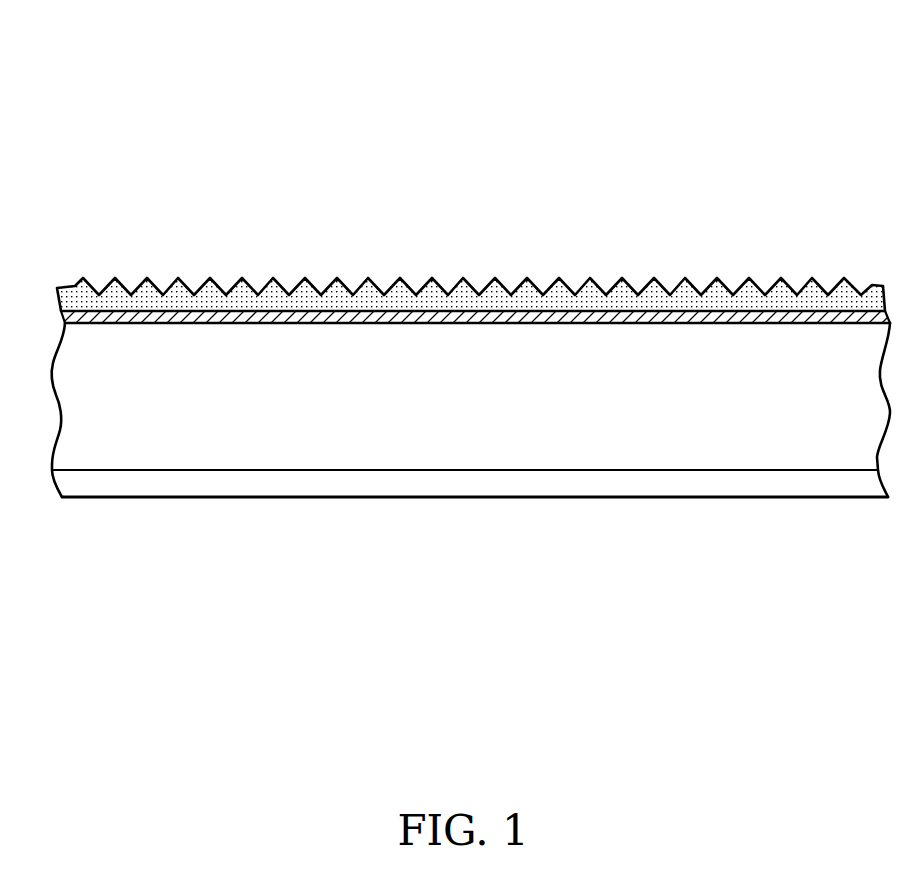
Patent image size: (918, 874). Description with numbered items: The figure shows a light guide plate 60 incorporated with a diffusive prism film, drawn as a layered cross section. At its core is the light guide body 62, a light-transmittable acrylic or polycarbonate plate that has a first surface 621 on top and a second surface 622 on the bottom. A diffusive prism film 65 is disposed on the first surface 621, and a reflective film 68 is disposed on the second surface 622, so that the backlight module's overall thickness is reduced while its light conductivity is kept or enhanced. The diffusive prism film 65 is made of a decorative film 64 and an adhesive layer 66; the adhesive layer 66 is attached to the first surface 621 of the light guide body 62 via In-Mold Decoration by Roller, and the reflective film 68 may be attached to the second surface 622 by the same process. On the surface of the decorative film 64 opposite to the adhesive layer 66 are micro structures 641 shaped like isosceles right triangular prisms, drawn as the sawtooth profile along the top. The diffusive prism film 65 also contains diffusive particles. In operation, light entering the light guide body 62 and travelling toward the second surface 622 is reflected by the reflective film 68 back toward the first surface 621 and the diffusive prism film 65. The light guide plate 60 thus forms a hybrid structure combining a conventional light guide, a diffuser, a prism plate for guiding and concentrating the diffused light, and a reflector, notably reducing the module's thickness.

The light guide plate 60 is at (701, 94).
The light guide body 62 is at (375, 433).
The first surface 621 is at (145, 323).
The second surface 622 is at (660, 470).
The decorative film 64 is at (287, 293).
The micro structures 641 is at (710, 290).
The diffusive prism film 65 is at (200, 212).
The adhesive layer 66 is at (242, 313).
The reflective film 68 is at (262, 483).